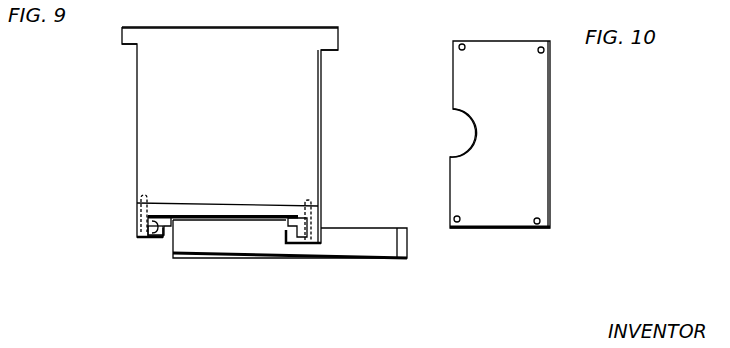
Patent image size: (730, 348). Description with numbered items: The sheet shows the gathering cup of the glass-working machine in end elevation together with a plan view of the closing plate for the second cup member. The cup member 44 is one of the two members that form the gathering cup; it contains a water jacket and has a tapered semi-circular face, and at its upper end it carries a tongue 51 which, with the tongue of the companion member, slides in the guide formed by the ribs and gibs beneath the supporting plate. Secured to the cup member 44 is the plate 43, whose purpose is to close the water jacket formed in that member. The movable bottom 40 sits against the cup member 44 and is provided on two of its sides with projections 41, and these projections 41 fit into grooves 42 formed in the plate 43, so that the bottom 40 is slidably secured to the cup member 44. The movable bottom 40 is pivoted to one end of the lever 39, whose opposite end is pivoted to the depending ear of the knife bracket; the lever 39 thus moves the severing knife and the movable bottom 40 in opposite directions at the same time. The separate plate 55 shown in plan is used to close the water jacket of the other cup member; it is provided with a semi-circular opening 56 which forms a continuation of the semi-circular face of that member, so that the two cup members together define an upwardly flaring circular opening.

In FIG. 9, the lever 39 is at (234, 14).
In FIG. 9, the movable bottom 40 is at (220, 258).
In FIG. 9, the projections 41 is at (167, 206).
In FIG. 9, the grooves 42 is at (156, 238).
In FIG. 9, the plate 43 is at (221, 205).
In FIG. 9, the cup member 44 is at (230, 135).
In FIG. 9, the tongues 51 is at (124, 41).
In FIG. 10, the plate 55 is at (544, 90).
In FIG. 10, the semi-circular opening 56 is at (475, 133).